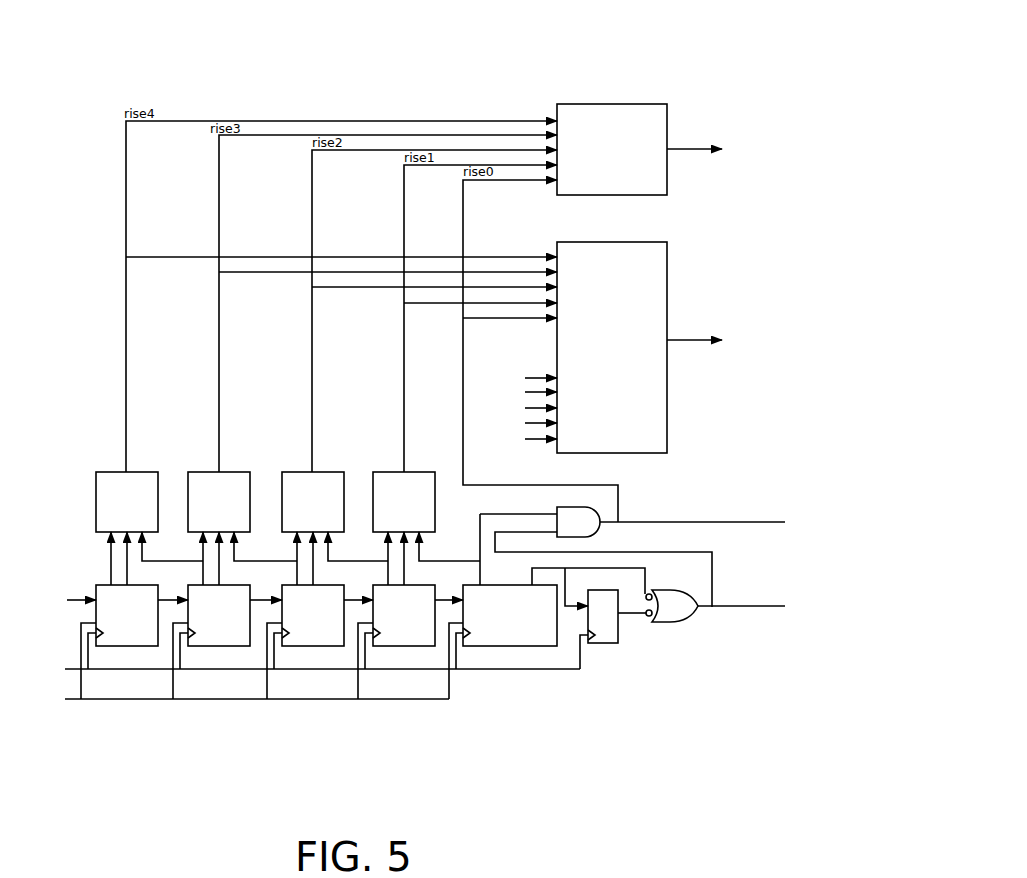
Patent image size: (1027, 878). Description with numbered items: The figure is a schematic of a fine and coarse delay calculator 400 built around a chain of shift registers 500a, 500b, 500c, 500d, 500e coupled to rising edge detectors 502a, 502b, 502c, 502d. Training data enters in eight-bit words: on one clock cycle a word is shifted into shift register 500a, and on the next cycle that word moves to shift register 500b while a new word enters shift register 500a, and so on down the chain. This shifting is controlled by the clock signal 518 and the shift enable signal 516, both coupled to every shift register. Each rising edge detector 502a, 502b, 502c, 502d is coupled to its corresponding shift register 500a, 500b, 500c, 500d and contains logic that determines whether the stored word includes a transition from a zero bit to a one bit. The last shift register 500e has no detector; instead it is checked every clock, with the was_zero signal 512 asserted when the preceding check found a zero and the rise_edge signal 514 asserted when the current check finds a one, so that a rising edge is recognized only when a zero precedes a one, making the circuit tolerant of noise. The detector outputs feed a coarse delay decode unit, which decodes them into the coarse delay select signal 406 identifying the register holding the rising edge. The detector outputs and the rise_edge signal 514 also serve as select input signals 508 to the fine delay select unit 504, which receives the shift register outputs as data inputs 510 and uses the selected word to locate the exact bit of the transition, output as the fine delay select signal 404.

The fine and coarse delay calculator 400 is at (644, 31).
The fine delay select signal 404 is at (718, 331).
The coarse delay select signal 406 is at (726, 137).
The shift register 500a is at (112, 615).
The shift register 500b is at (204, 615).
The shift register 500c is at (297, 615).
The shift register 500d is at (389, 615).
The shift register 500e is at (540, 580).
The rising edge detector 502a is at (149, 528).
The rising edge detector 502b is at (242, 528).
The rising edge detector 502c is at (335, 528).
The rising edge detector 502d is at (426, 528).
The fine delay select unit 504 is at (667, 440).
The select input signals 508 is at (569, 266).
The data input 510 is at (569, 395).
The was_zero signal 512 is at (742, 609).
The rise_edge signal 514 is at (682, 522).
The shift enable signal 516 is at (121, 702).
The clock signal 518 is at (79, 665).